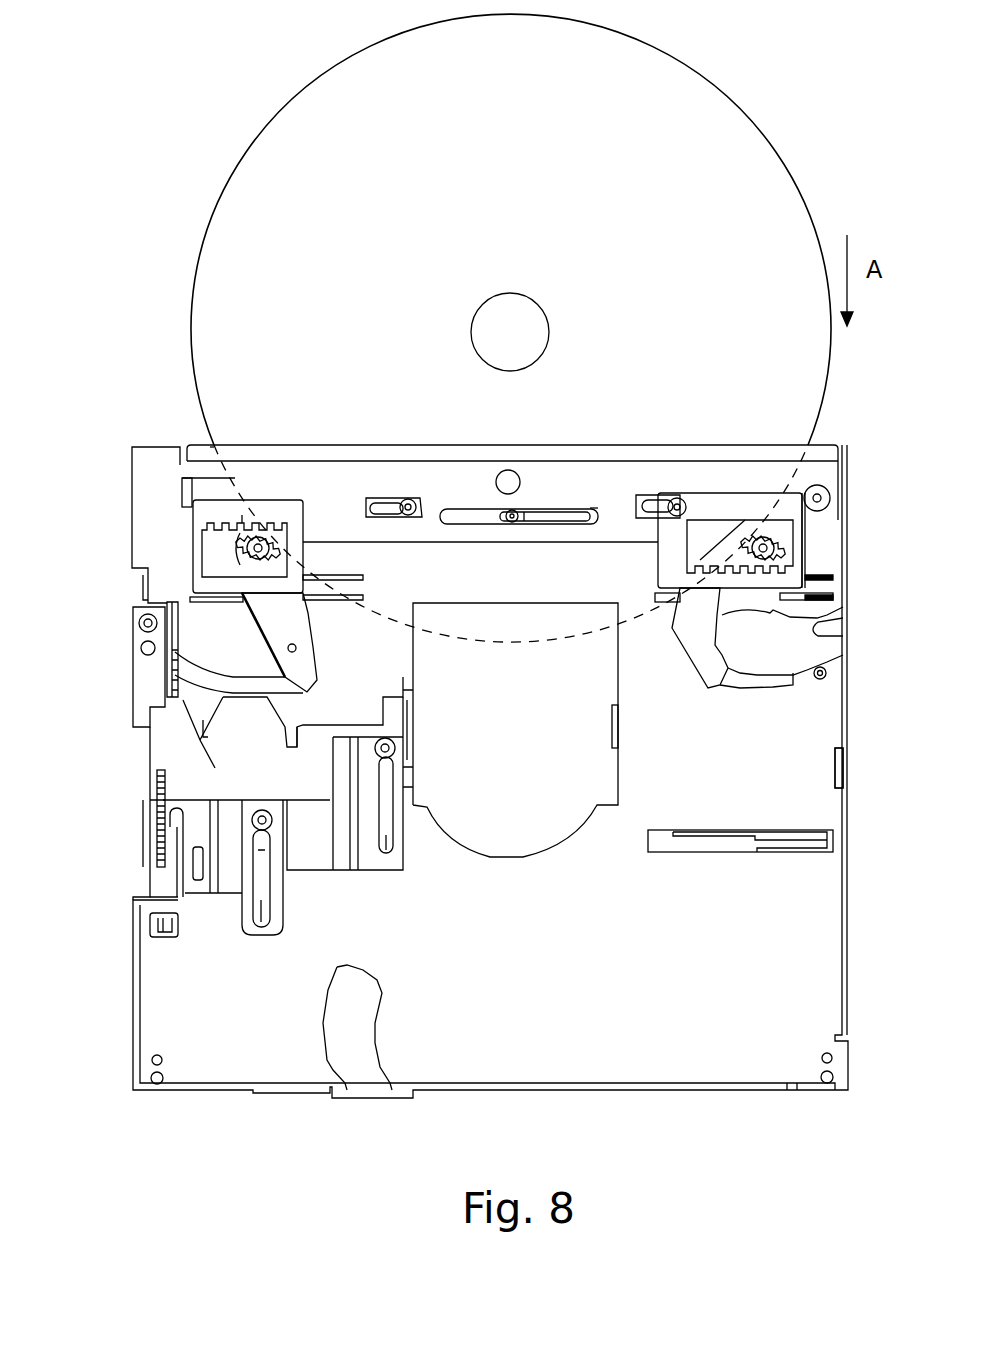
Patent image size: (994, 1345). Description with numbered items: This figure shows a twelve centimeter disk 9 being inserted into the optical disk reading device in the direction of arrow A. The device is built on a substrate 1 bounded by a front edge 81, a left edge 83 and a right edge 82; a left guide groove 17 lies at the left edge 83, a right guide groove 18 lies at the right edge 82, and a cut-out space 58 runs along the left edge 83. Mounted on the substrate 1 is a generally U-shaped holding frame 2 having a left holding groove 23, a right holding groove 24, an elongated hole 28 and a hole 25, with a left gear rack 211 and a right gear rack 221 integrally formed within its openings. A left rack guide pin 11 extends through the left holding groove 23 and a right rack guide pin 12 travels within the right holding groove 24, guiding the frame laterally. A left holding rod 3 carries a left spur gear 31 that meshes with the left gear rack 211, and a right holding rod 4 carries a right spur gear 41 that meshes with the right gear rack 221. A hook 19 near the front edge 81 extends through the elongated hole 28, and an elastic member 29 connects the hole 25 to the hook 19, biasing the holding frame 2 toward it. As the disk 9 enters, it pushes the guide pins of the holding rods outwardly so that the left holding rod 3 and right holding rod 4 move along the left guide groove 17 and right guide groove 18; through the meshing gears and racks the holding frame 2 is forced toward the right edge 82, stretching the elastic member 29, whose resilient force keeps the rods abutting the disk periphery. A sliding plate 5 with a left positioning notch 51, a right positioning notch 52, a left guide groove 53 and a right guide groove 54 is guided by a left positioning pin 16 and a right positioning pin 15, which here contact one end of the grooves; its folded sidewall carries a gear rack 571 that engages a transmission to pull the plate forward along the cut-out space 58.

The substrate 1 is at (770, 945).
The holding frame 2 is at (322, 470).
The left holding rod 3 is at (300, 650).
The right holding rod 4 is at (745, 615).
The sliding plate 5 is at (262, 737).
The 12 cm disk 9 is at (708, 122).
The left rack guide pin 11 is at (412, 485).
The right rack guide pin 12 is at (668, 505).
The right positioning pin 15 is at (392, 747).
The left positioning pin 16 is at (262, 810).
The left guide groove 17 is at (163, 707).
The right guide groove 18 is at (780, 685).
The hook 19 is at (513, 525).
The left holding groove 23 is at (398, 497).
The right holding groove 24 is at (663, 493).
The hole 25 is at (593, 510).
The elongated hole 28 is at (465, 525).
The elastic member 29 is at (568, 525).
The left spur gear 31 is at (285, 540).
The right spur gear 41 is at (785, 545).
The left positioning notch 51 is at (178, 673).
The right positioning notch 52 is at (300, 747).
The left guide groove 53 is at (262, 935).
The right guide groove 54 is at (390, 870).
The cut-out space 58 is at (138, 628).
The front edge 81 is at (212, 447).
The right edge 82 is at (845, 745).
The left edge 83 is at (153, 497).
The left gear rack 211 is at (242, 520).
The right gear rack 221 is at (808, 578).
The gear rack 571 is at (160, 823).